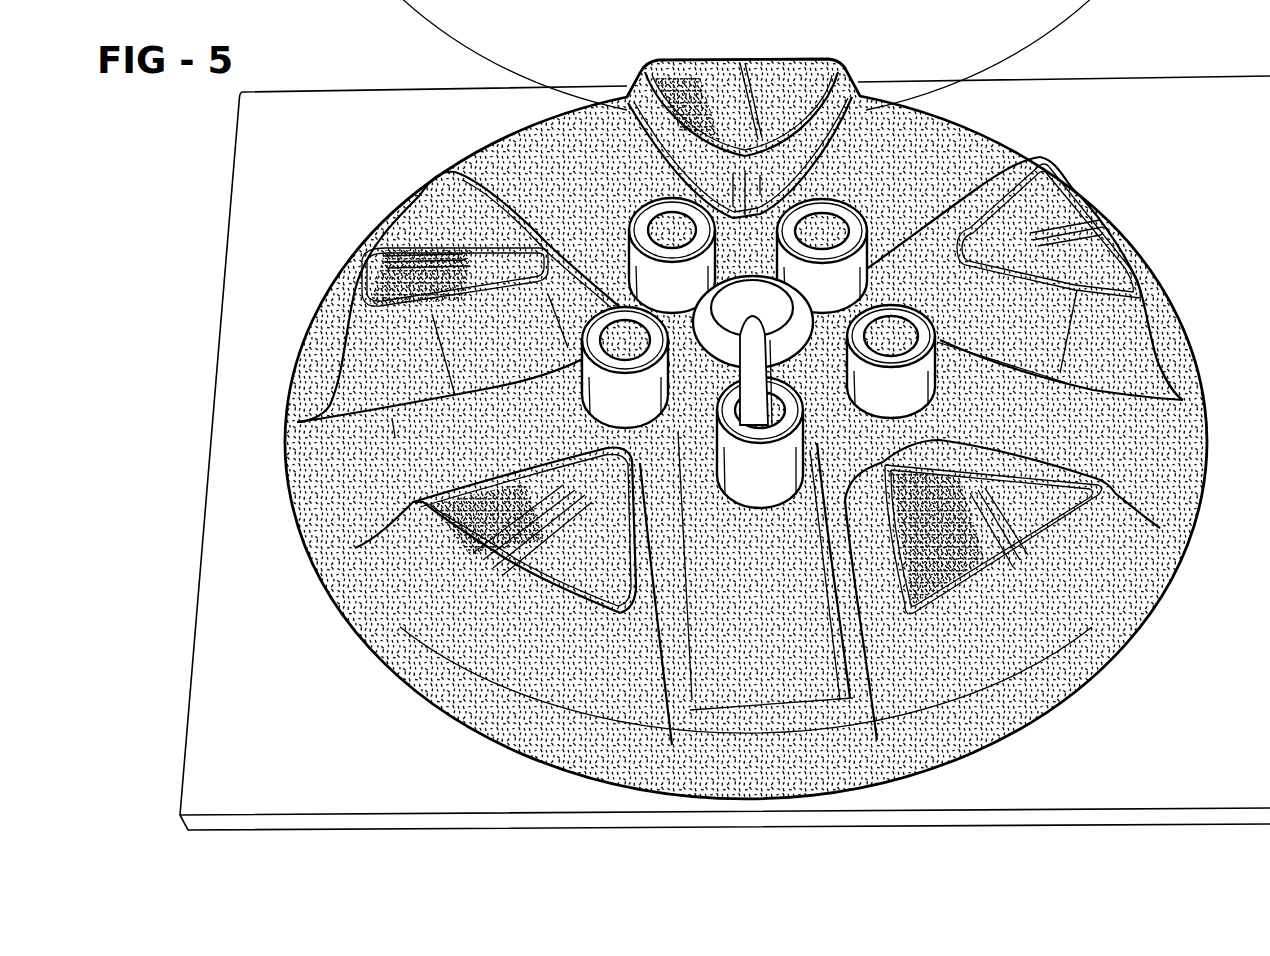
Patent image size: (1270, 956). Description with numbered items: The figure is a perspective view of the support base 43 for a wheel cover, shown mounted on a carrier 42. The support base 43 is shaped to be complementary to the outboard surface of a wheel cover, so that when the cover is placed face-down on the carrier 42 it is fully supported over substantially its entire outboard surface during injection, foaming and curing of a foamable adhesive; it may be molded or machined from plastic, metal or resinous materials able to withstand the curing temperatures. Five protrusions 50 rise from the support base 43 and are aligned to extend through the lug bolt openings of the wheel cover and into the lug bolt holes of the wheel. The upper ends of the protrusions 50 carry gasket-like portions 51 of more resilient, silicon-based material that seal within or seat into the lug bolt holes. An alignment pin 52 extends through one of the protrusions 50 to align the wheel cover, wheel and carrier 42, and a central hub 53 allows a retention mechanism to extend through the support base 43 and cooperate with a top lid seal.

The carrier 42 is at (225, 708).
The support base 43 is at (1148, 484).
The protrusions 50 is at (680, 302).
The gasket-like portions 51 is at (673, 258).
The alignment pin 52 is at (746, 399).
The central hub 53 is at (776, 361).